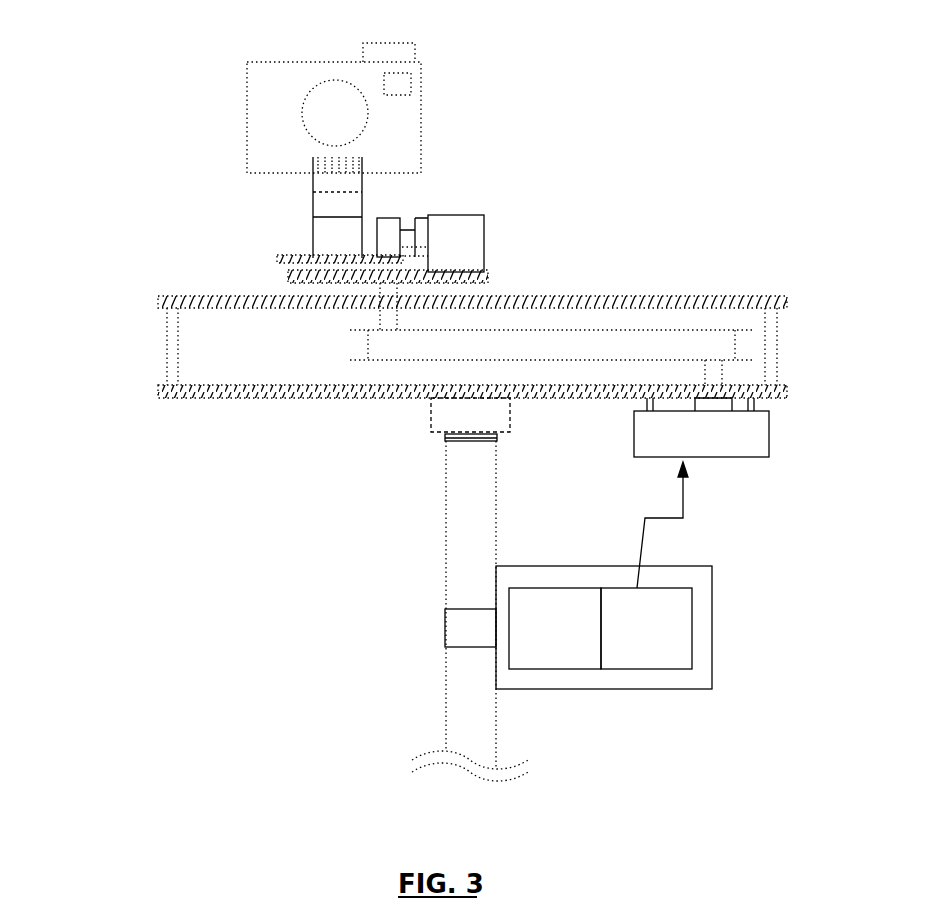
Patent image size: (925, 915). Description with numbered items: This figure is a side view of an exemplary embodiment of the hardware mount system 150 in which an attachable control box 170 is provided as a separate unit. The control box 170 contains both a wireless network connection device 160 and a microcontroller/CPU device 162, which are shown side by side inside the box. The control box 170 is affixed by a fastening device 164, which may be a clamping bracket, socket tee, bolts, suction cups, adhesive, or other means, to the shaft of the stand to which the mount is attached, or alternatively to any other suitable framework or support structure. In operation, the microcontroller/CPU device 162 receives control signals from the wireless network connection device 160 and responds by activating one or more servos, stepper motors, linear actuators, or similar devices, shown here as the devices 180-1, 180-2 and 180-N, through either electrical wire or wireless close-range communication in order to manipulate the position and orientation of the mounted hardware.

The hardware mount system 150 is at (134, 220).
The servo, stepper motor, linear actuator, or similar device 180-N is at (363, 207).
The servo, stepper motor, linear actuator, or similar device 180-2 is at (484, 235).
The servo, stepper motor, linear actuator, or similar device 180-1 is at (738, 458).
The fastening device 164 is at (470, 609).
The control box 170 is at (713, 612).
The wireless network connection device 160 is at (566, 669).
The microcontroller/CPU device 162 is at (645, 669).